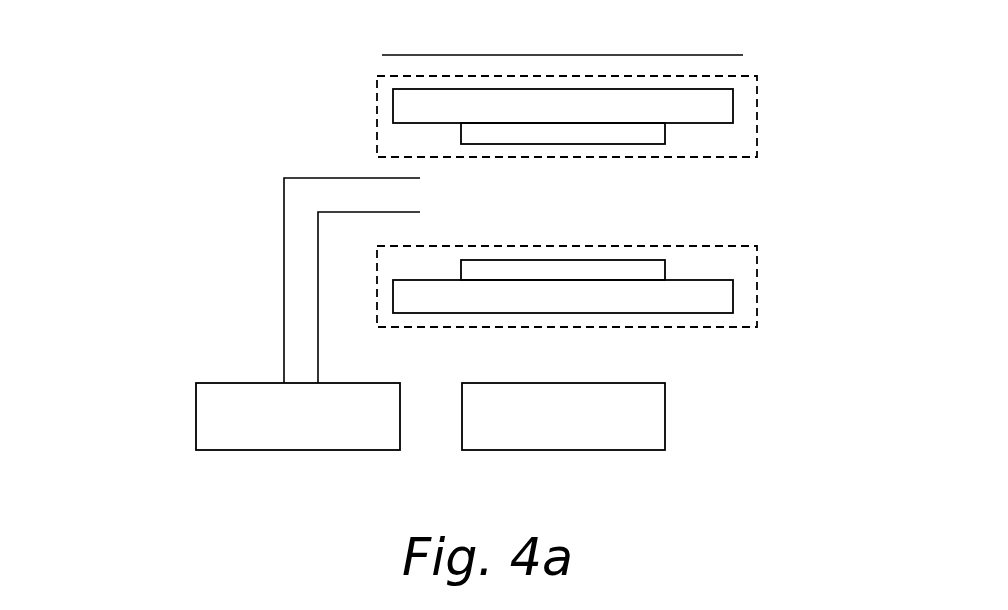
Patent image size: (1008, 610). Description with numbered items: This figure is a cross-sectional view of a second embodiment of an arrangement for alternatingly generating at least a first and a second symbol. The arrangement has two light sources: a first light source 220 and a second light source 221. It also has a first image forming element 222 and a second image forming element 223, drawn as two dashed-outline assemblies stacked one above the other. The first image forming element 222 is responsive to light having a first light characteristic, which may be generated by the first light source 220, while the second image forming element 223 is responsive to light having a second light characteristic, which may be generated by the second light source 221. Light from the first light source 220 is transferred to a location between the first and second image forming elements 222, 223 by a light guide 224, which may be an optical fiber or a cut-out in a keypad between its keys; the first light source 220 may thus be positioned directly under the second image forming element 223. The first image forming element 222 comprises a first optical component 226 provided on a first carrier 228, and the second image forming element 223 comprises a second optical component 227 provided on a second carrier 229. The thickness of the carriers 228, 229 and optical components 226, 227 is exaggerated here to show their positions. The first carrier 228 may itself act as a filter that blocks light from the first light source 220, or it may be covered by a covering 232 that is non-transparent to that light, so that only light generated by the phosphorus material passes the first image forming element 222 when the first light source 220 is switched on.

The first light source 220 is at (196, 422).
The second light source 221 is at (665, 415).
The first image forming element 222 is at (377, 117).
The second image forming element 223 is at (710, 327).
The light guide 224 is at (284, 273).
The first optical component 226 is at (665, 130).
The second optical component 227 is at (665, 262).
The first carrier 228 is at (733, 100).
The second carrier 229 is at (733, 300).
The covering 232 is at (382, 55).